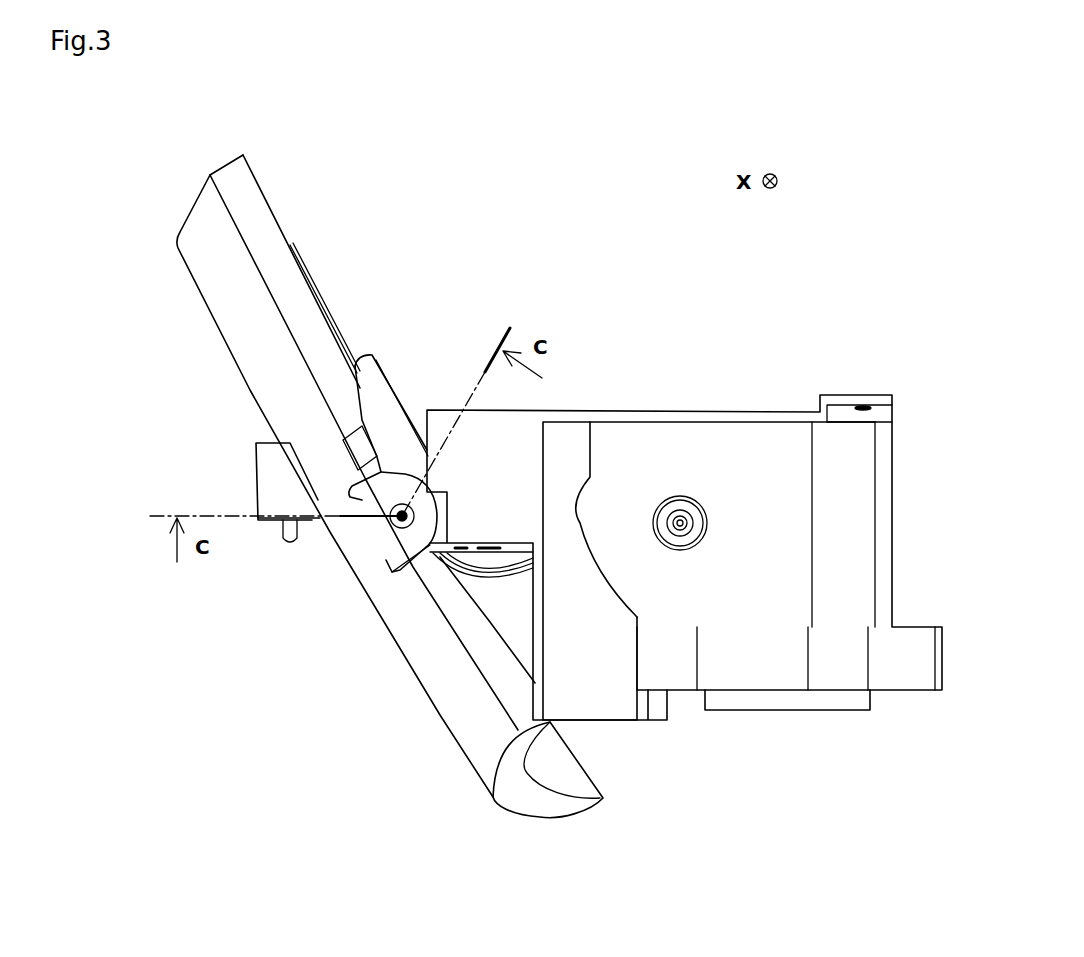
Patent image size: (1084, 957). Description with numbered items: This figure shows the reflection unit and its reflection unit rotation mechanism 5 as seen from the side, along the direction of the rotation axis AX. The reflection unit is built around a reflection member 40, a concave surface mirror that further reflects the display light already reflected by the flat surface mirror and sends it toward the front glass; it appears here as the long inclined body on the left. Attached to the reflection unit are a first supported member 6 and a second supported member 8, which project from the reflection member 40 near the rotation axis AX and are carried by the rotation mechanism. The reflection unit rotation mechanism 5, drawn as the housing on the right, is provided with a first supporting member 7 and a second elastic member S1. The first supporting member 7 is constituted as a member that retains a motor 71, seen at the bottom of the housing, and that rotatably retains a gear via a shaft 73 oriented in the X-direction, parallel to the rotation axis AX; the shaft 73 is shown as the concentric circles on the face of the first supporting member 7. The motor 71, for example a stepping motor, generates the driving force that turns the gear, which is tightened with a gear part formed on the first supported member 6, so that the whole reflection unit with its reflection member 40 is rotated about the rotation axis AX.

The reflection member 40 is at (265, 214).
The first supported member 6 is at (375, 387).
The second supported member 8 is at (268, 473).
The reflection unit rotation mechanism 5 is at (761, 340).
The first supporting member 7 is at (732, 452).
The shaft 73 is at (680, 521).
The motor 71 is at (793, 692).
The rotation axis AX is at (400, 518).
The second elastic member S1 is at (398, 543).